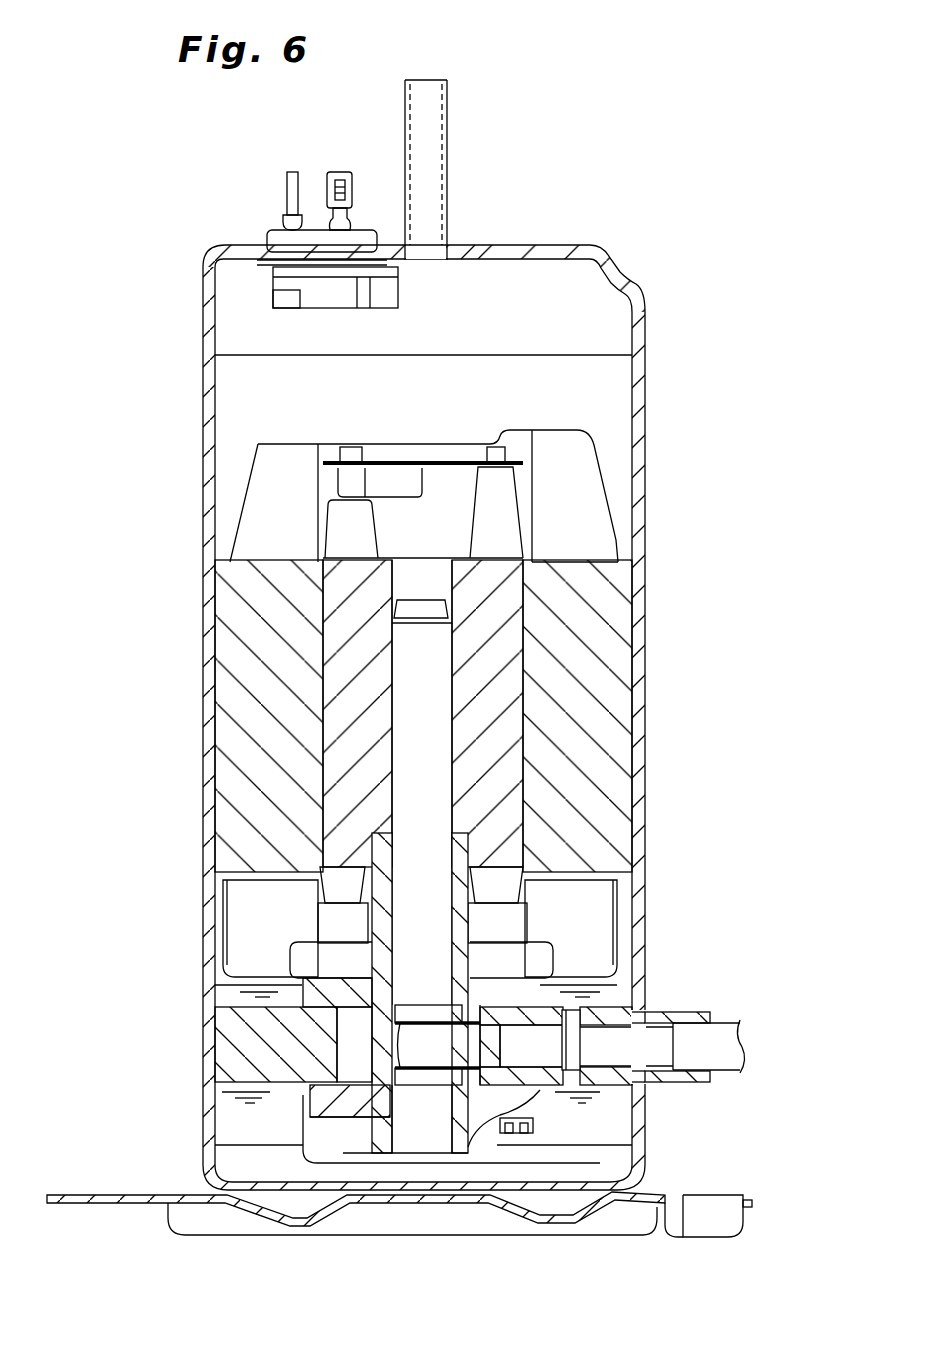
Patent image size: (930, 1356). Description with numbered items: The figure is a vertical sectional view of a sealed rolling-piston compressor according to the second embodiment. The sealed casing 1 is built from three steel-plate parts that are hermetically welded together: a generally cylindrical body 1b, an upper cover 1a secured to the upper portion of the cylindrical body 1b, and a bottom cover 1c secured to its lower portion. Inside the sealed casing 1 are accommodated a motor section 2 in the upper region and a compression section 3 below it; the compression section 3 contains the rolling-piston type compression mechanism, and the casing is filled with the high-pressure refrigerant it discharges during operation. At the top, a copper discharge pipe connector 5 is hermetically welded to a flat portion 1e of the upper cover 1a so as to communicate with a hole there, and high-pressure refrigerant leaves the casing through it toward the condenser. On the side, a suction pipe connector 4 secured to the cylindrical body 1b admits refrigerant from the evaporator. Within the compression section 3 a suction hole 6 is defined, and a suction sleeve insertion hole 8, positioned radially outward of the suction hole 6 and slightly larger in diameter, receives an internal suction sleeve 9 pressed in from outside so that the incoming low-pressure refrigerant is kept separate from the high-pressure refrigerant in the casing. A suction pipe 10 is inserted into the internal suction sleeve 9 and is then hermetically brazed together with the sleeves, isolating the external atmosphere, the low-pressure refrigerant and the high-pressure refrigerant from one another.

The sealed casing 1 is at (432, 705).
The upper cover 1a is at (513, 245).
The cylindrical body 1b is at (633, 730).
The bottom cover 1c is at (424, 1204).
The flat portion 1e is at (463, 245).
The motor section 2 is at (323, 593).
The compression section 3 is at (237, 1027).
The suction pipe connector 4 is at (665, 1007).
The discharge pipe connector 5 is at (445, 185).
The suction hole 6 is at (522, 1040).
The suction sleeve insertion hole 8 is at (570, 1053).
The internal suction sleeve 9 is at (647, 1052).
The suction pipe 10 is at (727, 1043).